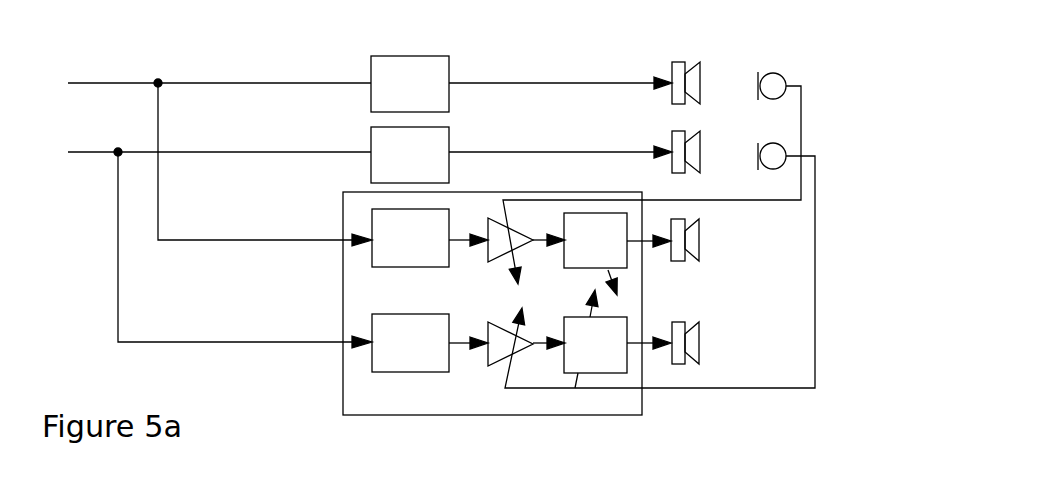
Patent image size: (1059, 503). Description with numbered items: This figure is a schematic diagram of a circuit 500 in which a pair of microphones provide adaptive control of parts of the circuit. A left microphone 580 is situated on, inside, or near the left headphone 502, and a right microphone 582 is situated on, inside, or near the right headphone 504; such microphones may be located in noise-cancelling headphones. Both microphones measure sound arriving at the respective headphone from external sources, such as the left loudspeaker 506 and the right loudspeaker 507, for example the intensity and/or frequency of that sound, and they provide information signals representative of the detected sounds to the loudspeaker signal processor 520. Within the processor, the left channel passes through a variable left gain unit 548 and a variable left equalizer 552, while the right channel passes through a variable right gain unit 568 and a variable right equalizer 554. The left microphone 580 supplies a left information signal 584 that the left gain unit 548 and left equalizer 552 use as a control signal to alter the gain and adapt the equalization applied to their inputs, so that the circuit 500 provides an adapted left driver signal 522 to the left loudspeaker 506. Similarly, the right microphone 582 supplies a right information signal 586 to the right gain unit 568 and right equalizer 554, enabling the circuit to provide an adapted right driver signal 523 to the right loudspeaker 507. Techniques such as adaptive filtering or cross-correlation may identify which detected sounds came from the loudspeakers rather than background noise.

The circuit 500 is at (84, 52).
The left headphone 502 is at (703, 73).
The right headphone 504 is at (703, 158).
The left loudspeaker 506 is at (702, 241).
The right loudspeaker 507 is at (702, 343).
The loudspeaker signal processor 520 is at (422, 415).
The adapted left driver signal 522 is at (657, 246).
The adapted right driver signal 523 is at (656, 348).
The variable left gain unit 548 is at (491, 217).
The variable right gain unit 568 is at (513, 353).
The variable left equalizer 552 is at (573, 212).
The variable right equalizer 554 is at (603, 374).
The left microphone 580 is at (778, 73).
The right microphone 582 is at (786, 152).
The left information signal 584 is at (802, 128).
The right information signal 586 is at (817, 257).